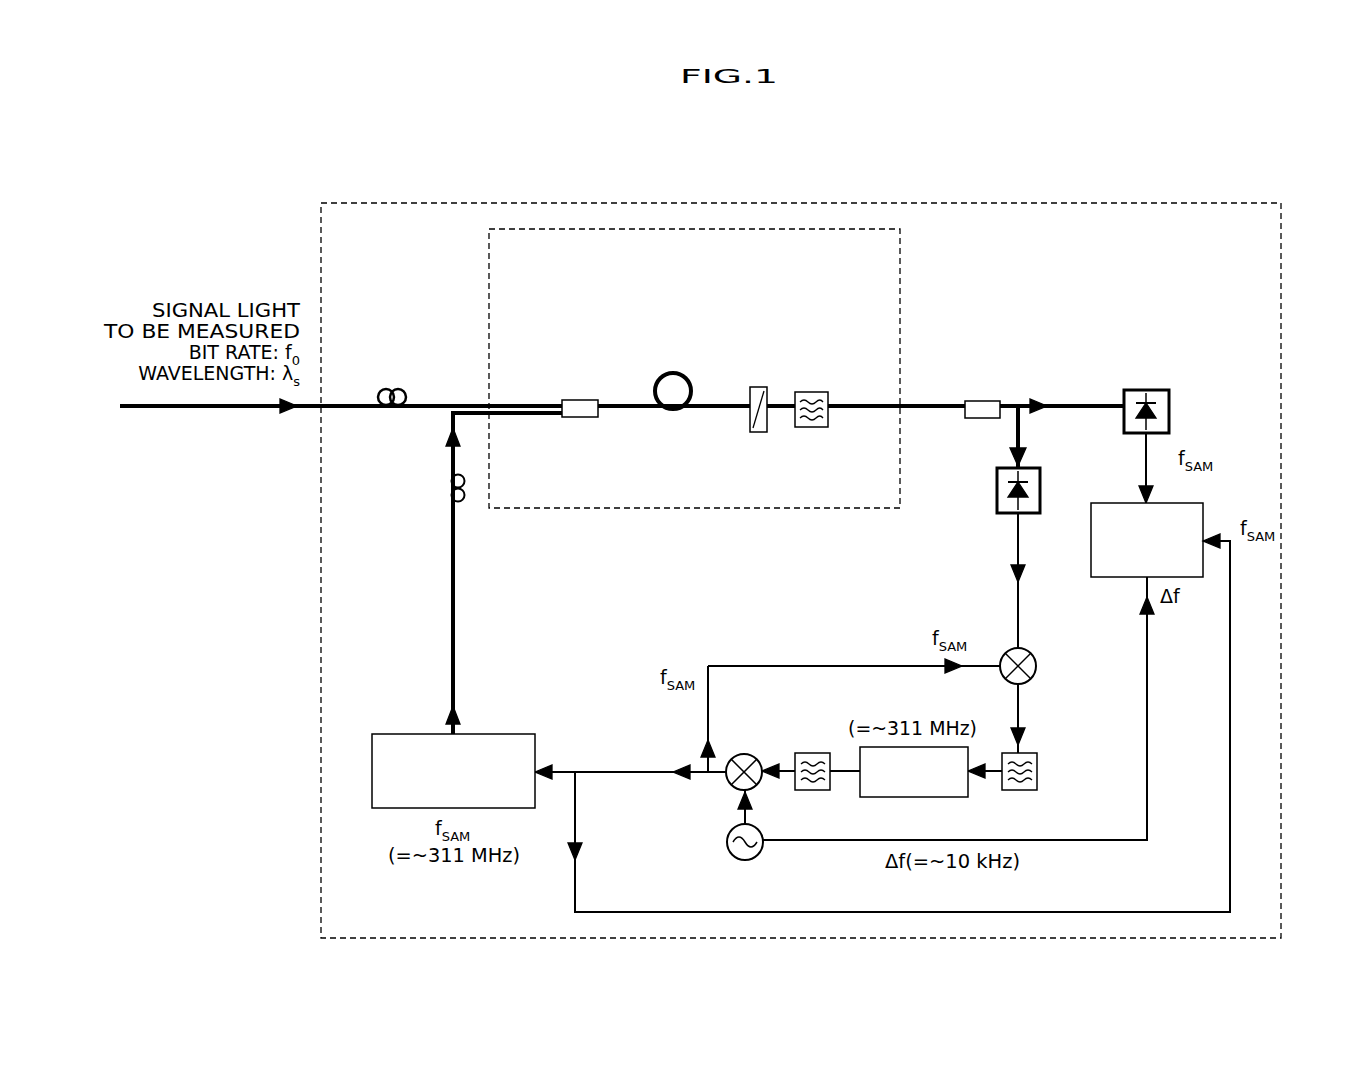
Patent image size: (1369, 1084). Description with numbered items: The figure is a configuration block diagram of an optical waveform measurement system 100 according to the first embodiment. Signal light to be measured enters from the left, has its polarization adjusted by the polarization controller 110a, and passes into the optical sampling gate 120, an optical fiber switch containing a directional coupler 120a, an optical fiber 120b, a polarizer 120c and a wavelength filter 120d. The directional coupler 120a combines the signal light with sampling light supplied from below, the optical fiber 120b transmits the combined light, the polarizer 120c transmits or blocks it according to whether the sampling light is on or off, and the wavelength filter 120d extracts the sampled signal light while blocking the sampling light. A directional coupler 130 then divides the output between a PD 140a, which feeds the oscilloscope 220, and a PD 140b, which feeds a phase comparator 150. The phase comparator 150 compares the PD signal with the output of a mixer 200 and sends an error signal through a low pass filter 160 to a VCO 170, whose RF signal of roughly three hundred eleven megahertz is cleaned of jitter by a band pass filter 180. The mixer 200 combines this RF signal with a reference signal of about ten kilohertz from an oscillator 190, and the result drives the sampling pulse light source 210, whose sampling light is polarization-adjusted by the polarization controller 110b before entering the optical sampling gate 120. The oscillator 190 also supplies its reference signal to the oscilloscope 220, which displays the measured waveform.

The optical waveform measurement system 100 is at (1038, 196).
The polarization controller 110a is at (390, 389).
The polarization controller 110b is at (466, 502).
The optical sampling gate 120 is at (901, 264).
The directional coupler 120a is at (578, 400).
The optical fiber 120b is at (676, 372).
The polarizer 120c is at (756, 386).
The wavelength filter 120d is at (810, 428).
The directional coupler 130 is at (984, 400).
The photo diode (PD) 140a is at (1146, 389).
The photo diode (PD) 140b is at (1042, 468).
The phase comparator 150 is at (1006, 652).
The low pass filter (LPF) 160 is at (1038, 770).
The VCO 170 is at (946, 799).
The band pass filter (BPF) 180 is at (812, 752).
The oscillator 190 is at (727, 843).
The mixer 200 is at (745, 752).
The sampling pulse light source 210 is at (503, 732).
The oscilloscope 220 is at (1116, 500).